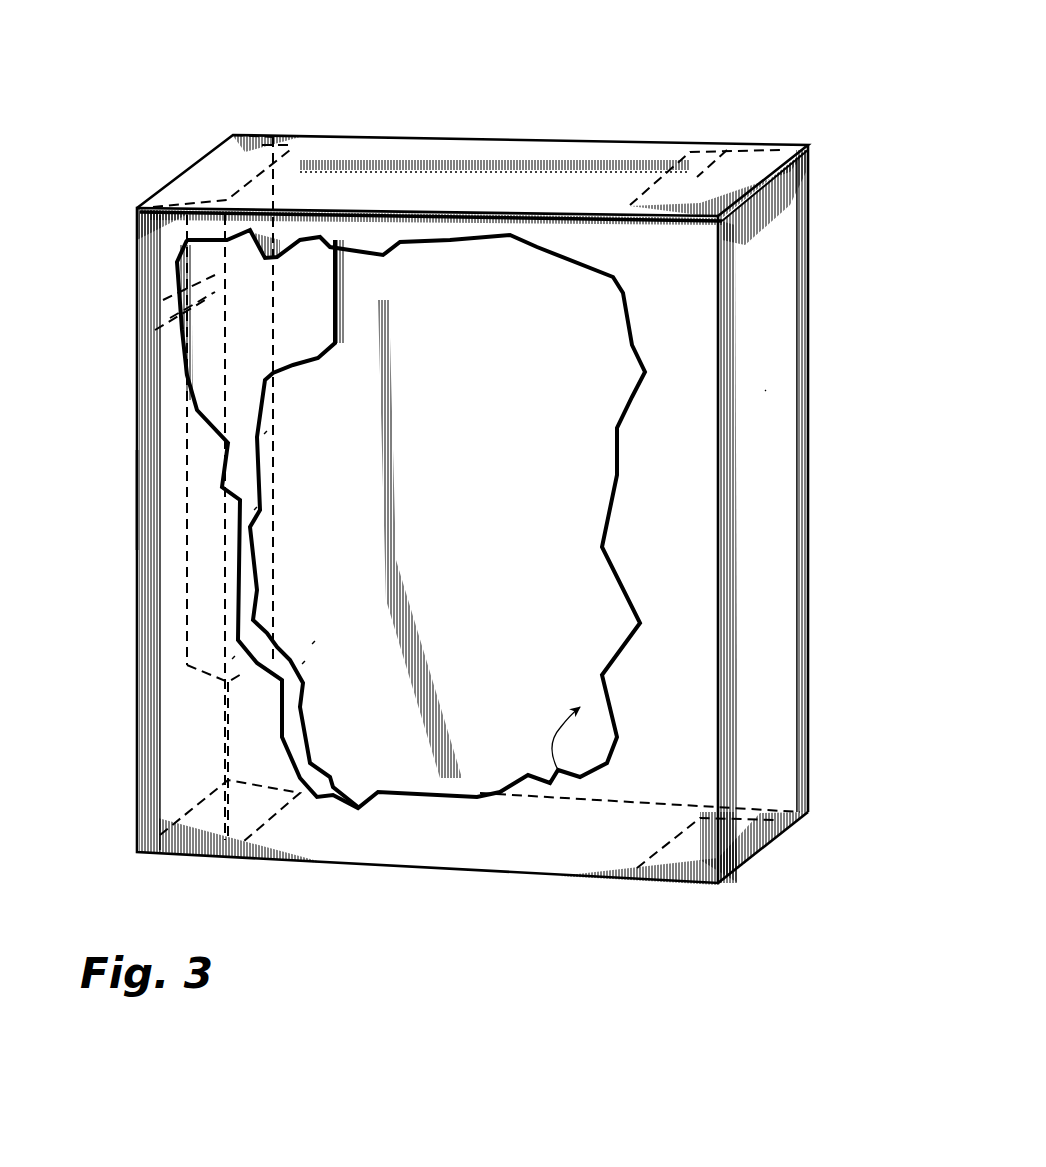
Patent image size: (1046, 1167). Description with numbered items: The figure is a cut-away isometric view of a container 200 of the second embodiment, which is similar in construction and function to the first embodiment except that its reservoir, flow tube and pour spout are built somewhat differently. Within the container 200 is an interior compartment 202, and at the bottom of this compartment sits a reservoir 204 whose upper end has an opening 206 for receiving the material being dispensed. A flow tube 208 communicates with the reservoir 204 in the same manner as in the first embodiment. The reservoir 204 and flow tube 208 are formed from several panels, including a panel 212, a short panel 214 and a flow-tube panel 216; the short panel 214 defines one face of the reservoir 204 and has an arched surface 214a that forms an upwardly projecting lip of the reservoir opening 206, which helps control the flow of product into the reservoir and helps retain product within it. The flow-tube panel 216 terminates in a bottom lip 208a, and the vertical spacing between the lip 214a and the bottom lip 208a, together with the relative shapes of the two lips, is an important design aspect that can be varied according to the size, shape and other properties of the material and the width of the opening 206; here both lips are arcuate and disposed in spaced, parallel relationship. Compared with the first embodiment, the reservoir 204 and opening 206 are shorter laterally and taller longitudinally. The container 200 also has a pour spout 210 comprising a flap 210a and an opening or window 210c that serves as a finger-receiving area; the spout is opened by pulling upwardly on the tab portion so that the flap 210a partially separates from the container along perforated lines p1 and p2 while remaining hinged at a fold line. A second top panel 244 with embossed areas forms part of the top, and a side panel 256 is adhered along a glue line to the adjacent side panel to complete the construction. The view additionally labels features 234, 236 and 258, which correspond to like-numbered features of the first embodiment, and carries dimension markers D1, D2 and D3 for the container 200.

The container 200 is at (672, 68).
The interior compartment 202 is at (580, 777).
The reservoir 204 is at (330, 707).
The reservoir opening 206 is at (250, 640).
The flow tube 208 is at (290, 455).
The bottom lip 208a is at (233, 657).
The pour spout 210 is at (137, 187).
The flap 210a is at (185, 228).
The window 210c is at (178, 335).
The panel 212 is at (255, 508).
The short panel 214 is at (303, 662).
The arched surface 214a is at (313, 642).
The flow-tube panel 216 is at (265, 432).
The side wall 234 is at (765, 390).
The top wall 236 is at (737, 140).
The second top panel 244 is at (360, 170).
The side panel 256 is at (137, 498).
The corner region 258 is at (235, 135).
The perforated line p1 is at (185, 270).
The perforated line p2 is at (207, 222).
The height dimension D1' D1 is at (818, 146).
The width dimension D2' D2 is at (718, 883).
The depth dimension D3' D3 is at (723, 885).